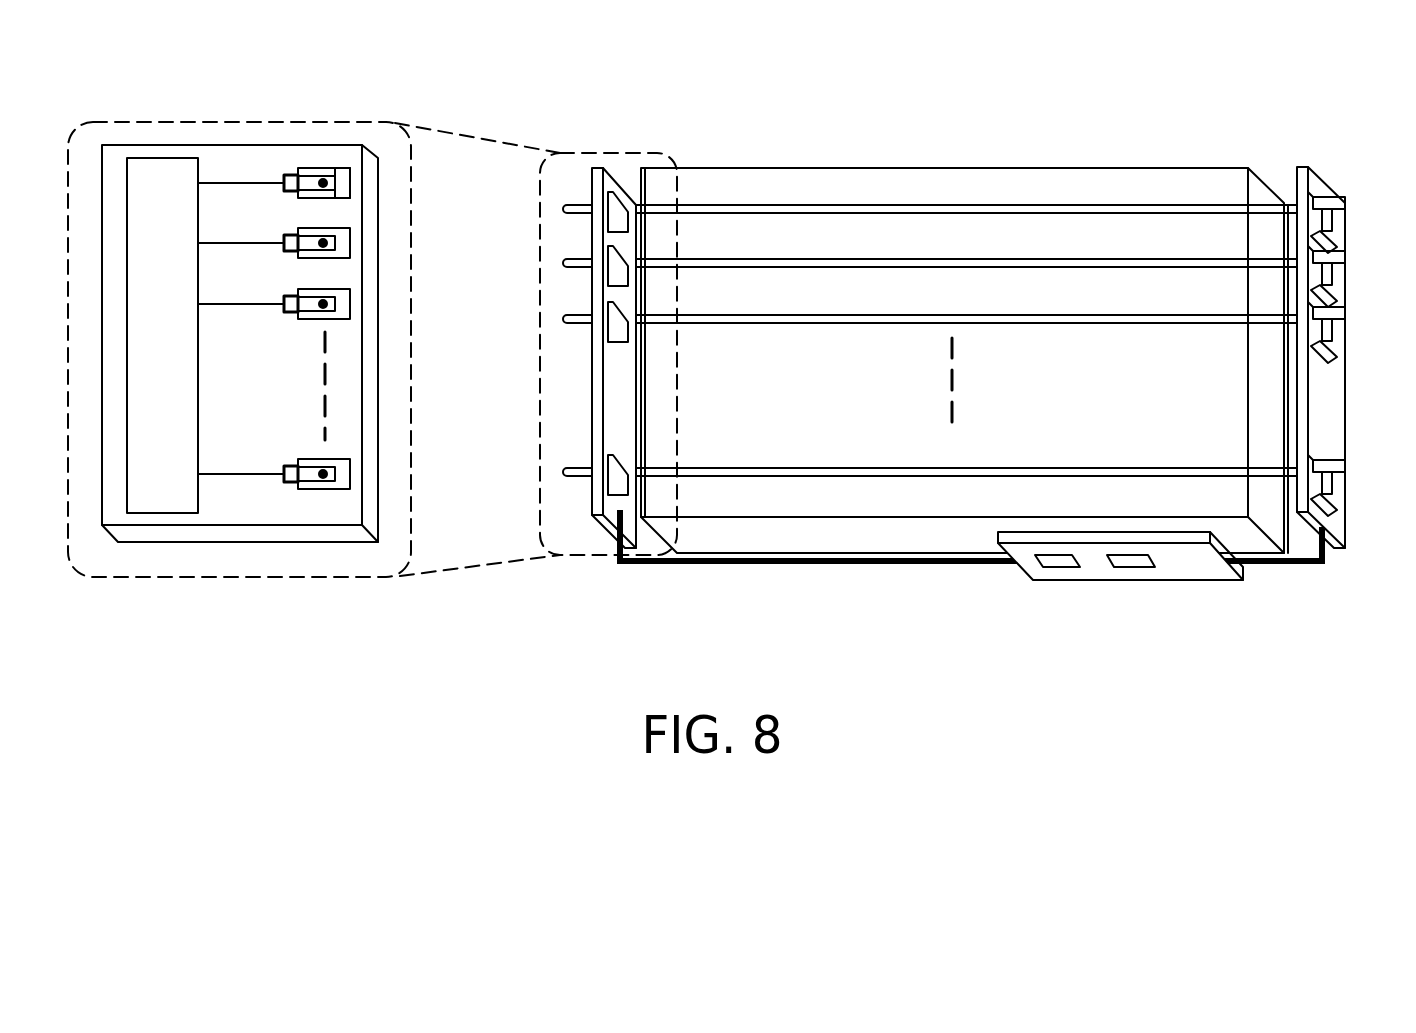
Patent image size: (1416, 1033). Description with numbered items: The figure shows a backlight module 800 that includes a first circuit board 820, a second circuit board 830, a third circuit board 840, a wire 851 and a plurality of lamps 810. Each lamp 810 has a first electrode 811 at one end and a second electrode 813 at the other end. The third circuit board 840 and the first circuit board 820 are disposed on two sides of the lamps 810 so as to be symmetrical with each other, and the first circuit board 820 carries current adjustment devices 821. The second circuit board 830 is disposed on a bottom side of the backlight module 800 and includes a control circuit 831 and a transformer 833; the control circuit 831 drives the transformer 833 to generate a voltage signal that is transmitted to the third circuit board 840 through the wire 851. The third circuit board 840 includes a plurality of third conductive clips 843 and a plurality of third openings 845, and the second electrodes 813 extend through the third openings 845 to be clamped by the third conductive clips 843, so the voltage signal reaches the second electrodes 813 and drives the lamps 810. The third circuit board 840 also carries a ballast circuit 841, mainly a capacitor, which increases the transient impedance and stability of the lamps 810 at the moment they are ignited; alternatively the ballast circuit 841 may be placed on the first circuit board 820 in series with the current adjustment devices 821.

The backlight module 800 is at (1018, 386).
The lamps 810 is at (1108, 208).
The first electrode 811 is at (1332, 207).
The second electrode 813 is at (328, 245).
The first circuit board 820 is at (1356, 316).
The current adjustment devices 821 is at (1327, 362).
The second circuit board 830 is at (1120, 600).
The control circuit 831 is at (1068, 567).
The transformer 833 is at (1137, 567).
The third circuit board 840 is at (225, 145).
The ballast circuit 841 is at (153, 158).
The third conductive clips 843 is at (308, 178).
The third openings 845 is at (350, 183).
The wire 851 is at (710, 568).